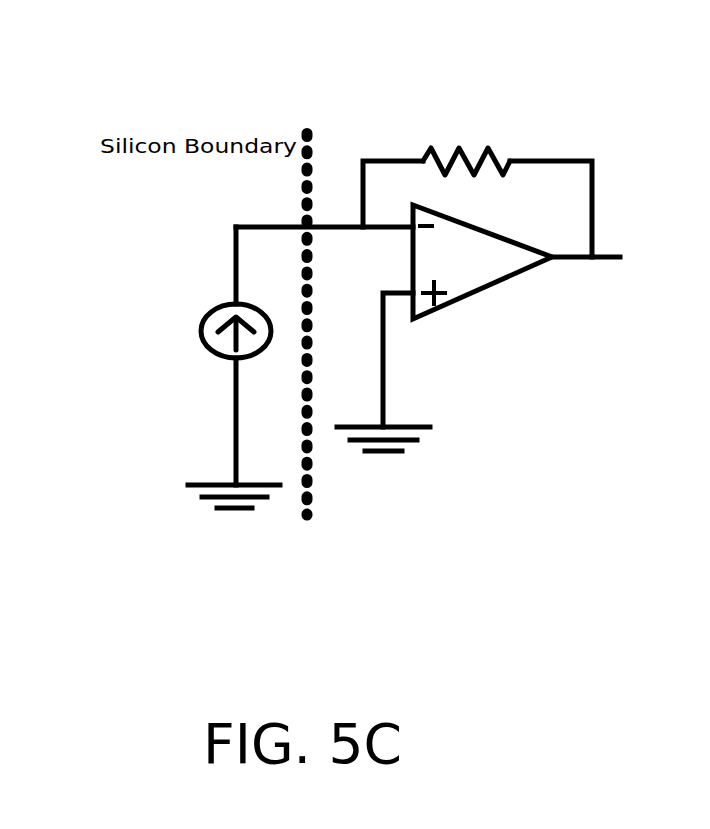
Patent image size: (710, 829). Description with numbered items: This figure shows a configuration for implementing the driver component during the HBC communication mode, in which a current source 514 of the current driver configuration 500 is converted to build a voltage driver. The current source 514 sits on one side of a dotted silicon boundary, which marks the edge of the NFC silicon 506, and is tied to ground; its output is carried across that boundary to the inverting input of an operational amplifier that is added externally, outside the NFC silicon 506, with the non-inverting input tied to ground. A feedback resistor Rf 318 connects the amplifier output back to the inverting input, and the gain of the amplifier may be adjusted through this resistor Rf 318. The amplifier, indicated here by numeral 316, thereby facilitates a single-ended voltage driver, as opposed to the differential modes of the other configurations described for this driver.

The current driver configuration 500 is at (180, 247).
The current source 514 is at (222, 368).
The NFC silicon 506 is at (318, 138).
The resistor Rf 318 is at (485, 127).
The operational amplifier 316 is at (573, 130).